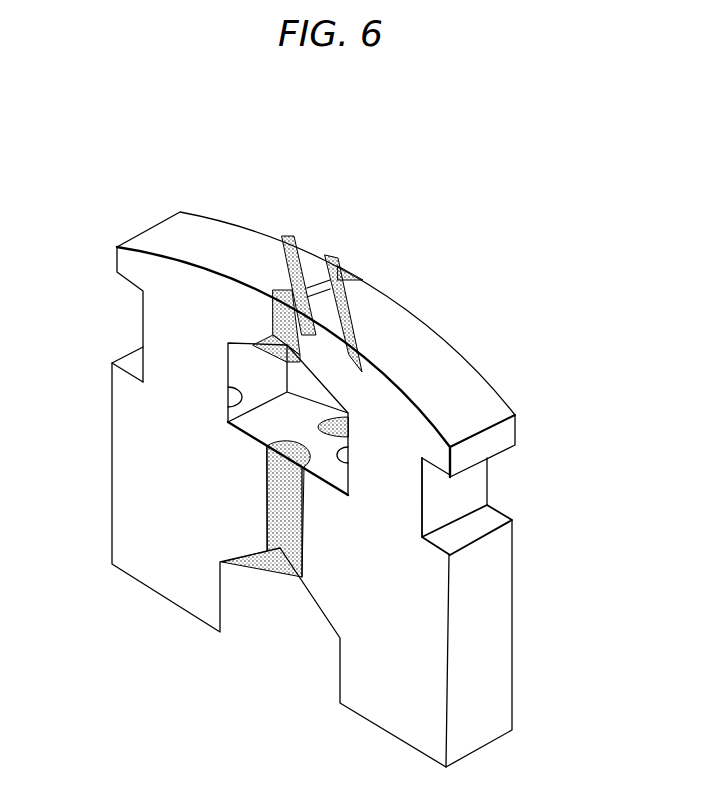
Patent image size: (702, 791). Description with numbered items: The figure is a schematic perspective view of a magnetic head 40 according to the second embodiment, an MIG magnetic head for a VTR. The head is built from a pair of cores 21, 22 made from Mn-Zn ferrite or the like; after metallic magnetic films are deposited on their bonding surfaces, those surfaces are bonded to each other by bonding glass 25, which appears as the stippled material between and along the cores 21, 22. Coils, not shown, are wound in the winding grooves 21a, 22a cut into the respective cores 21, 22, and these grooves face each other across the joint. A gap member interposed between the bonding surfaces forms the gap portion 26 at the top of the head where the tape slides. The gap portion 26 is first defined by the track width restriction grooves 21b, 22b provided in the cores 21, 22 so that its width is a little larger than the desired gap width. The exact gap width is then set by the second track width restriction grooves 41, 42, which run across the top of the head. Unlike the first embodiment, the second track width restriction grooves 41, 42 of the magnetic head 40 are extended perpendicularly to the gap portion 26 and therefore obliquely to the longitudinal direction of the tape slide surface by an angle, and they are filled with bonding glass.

The magnetic head 40 is at (518, 341).
The second track width restriction groove 41 is at (355, 326).
The second track width restriction groove 42 is at (282, 252).
The gap portion 26 is at (318, 284).
The core 21 is at (153, 548).
The winding groove 21a is at (228, 412).
The track width restriction groove 21b is at (282, 290).
The core 22 is at (375, 672).
The winding groove 22a is at (347, 467).
The track width restriction groove 22b is at (363, 279).
The bonding glass 25 is at (263, 338).